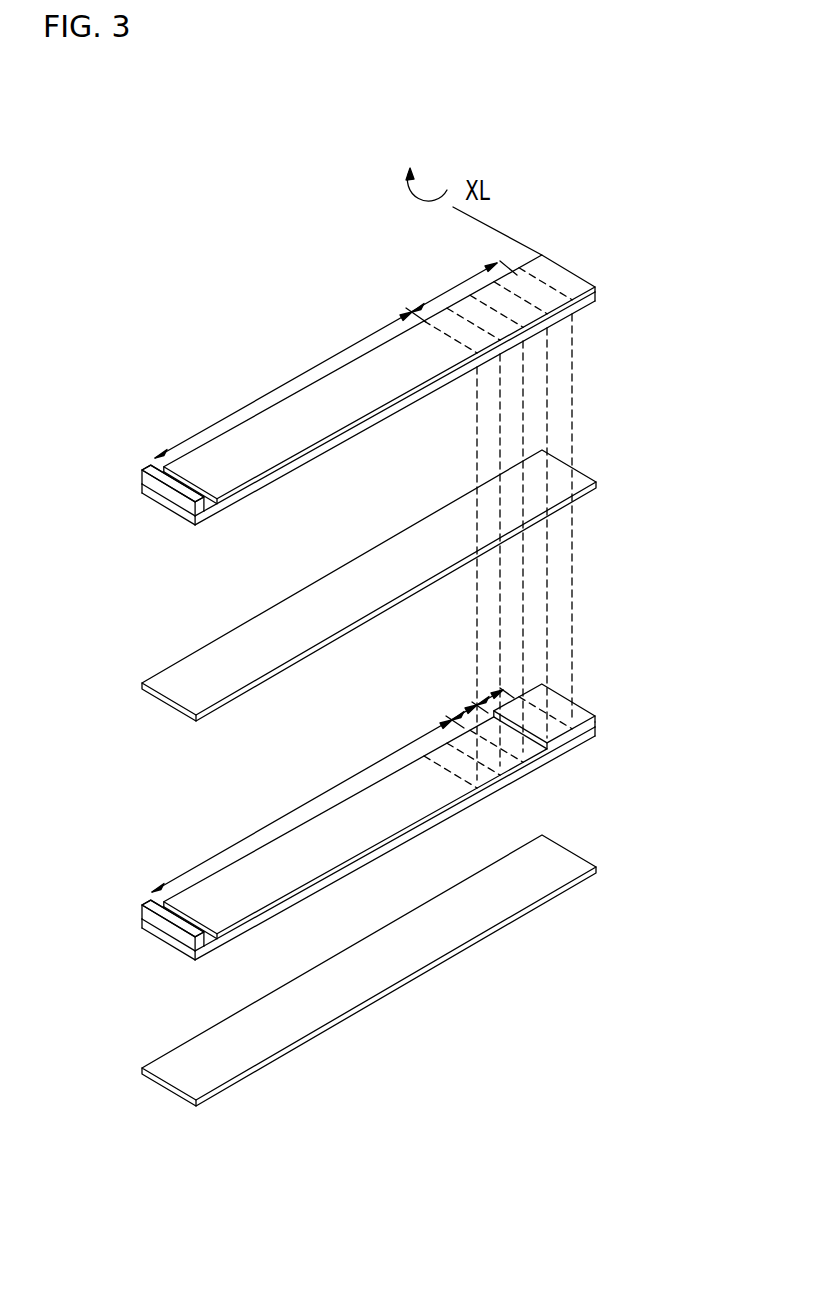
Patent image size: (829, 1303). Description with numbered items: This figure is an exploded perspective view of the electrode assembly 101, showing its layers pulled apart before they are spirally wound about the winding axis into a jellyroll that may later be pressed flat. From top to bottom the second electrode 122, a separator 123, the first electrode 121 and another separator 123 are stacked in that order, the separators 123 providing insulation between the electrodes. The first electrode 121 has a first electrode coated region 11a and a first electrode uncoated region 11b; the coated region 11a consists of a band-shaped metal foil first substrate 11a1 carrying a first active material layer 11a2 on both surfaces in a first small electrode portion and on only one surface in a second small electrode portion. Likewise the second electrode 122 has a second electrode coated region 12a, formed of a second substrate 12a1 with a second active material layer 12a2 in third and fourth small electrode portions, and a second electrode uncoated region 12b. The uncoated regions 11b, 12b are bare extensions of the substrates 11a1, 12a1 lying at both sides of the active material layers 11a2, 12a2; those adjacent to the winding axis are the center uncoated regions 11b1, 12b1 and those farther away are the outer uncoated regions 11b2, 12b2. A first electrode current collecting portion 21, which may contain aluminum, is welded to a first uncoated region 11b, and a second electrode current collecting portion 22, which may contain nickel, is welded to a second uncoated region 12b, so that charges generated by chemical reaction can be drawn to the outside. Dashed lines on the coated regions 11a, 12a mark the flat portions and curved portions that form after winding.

The electrode assembly 101 is at (328, 122).
The first electrode 121 is at (737, 680).
The second electrode 122 is at (737, 245).
The separator 123 is at (141, 684).
The first electrode current collecting portion 21 is at (142, 904).
The second electrode current collecting portion 22 is at (150, 468).
The first electrode coated region 11a is at (689, 752).
The first substrate 11a1 is at (548, 757).
The first active material layer 11a2 is at (570, 747).
The first electrode uncoated region 11b is at (689, 661).
The center uncoated region 11b1 is at (577, 716).
The outer uncoated region 11b2 is at (110, 925).
The second electrode coated region 12a is at (689, 317).
The second substrate 12a1 is at (548, 322).
The second active material layer 12a2 is at (570, 312).
The second electrode uncoated region 12b is at (689, 226).
The center uncoated region 12b1 is at (573, 283).
The outer uncoated region 12b2 is at (120, 520).